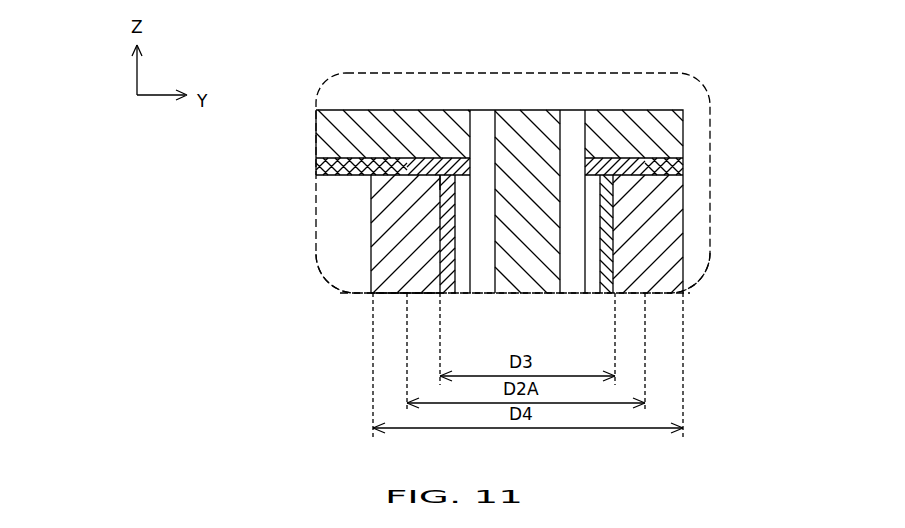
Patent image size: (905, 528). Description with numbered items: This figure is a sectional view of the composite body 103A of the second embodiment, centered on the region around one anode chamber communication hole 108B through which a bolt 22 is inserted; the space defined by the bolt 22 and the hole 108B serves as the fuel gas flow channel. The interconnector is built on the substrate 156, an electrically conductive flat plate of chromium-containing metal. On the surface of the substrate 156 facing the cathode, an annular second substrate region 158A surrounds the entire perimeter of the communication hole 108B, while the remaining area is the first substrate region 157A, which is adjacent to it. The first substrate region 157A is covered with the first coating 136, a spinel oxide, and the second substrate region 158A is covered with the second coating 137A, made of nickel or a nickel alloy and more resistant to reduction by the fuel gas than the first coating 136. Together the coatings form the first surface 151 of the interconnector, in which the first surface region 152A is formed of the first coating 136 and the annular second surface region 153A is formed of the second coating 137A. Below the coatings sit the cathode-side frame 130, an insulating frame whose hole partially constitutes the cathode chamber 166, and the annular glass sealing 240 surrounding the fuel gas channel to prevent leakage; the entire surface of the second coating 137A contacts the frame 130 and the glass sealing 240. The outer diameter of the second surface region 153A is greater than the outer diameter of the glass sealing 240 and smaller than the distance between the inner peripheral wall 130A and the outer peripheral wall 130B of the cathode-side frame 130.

The composite body 103A is at (687, 102).
The substrate 156 is at (327, 133).
The first coating 136 is at (318, 171).
The first substrate region 157A is at (332, 160).
The second substrate region 158A is at (450, 158).
The second coating 137A is at (472, 108).
The bolt 22 is at (525, 108).
The anode chamber communication hole 108B is at (570, 108).
The first surface 151 is at (315, 234).
The first surface region 152A is at (352, 175).
The second surface region 153A is at (456, 176).
The cathode chamber 166 is at (363, 257).
The cathode-side frame 130 is at (348, 293).
The inner peripheral wall 130A is at (352, 277).
The outer peripheral wall 130B is at (684, 287).
The glass sealing 240 is at (425, 276).